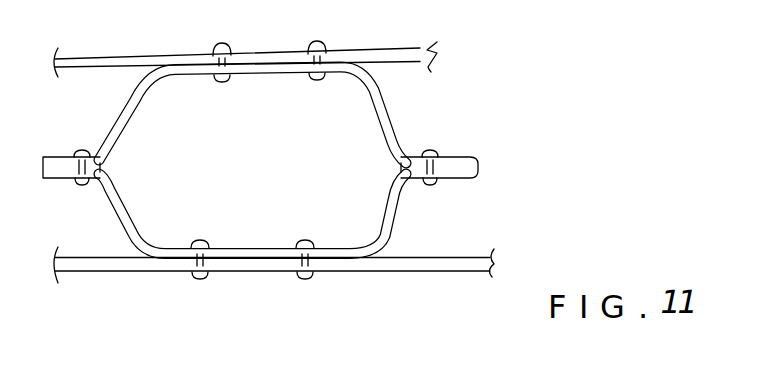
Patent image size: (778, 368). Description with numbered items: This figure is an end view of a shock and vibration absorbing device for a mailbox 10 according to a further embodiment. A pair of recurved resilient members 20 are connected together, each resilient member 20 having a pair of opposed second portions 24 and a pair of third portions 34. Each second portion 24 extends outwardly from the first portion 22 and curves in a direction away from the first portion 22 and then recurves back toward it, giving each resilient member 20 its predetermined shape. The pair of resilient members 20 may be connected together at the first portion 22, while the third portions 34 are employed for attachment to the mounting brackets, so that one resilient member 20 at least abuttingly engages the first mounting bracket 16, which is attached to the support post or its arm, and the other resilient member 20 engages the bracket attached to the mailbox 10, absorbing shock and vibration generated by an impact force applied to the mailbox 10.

The mailbox 10 is at (425, 43).
The first mounting bracket 16 is at (433, 276).
The resilient member 20 is at (417, 104).
The first portion 22 is at (275, 77).
The second portion 24 is at (152, 98).
The third portion 34 is at (68, 156).